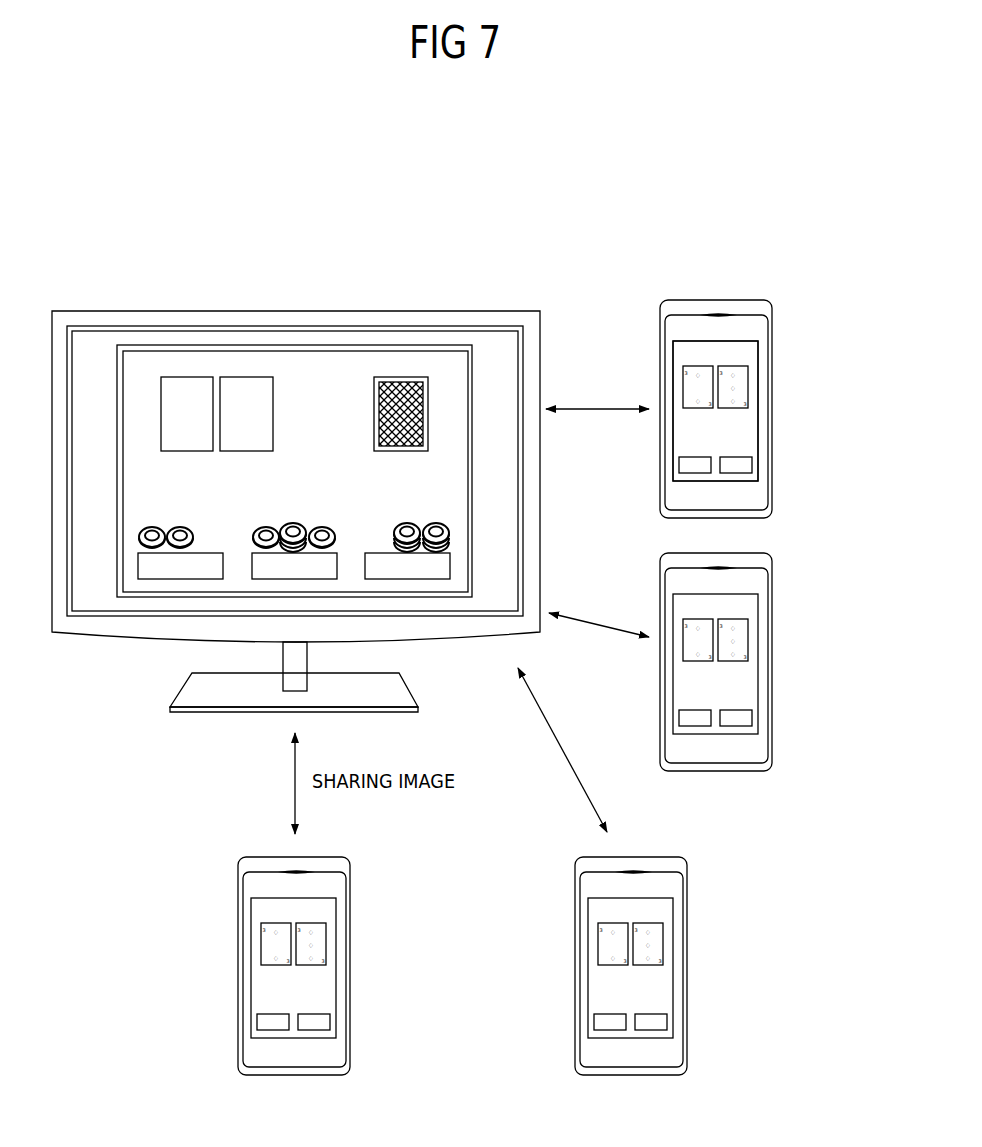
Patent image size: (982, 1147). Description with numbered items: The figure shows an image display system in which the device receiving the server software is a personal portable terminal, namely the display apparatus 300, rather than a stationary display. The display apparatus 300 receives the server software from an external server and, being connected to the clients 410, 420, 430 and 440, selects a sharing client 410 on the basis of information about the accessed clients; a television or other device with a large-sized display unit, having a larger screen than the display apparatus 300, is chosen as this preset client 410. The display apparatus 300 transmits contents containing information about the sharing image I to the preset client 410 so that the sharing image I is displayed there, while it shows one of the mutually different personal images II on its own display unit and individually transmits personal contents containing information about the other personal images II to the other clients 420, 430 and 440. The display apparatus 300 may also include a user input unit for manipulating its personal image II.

The preset client 410 is at (360, 302).
The client 420 is at (792, 362).
The client 430 is at (792, 616).
The client 440 is at (708, 921).
The display apparatus 300 is at (372, 920).
The sharing image I is at (178, 350).
The personal image II is at (758, 428).